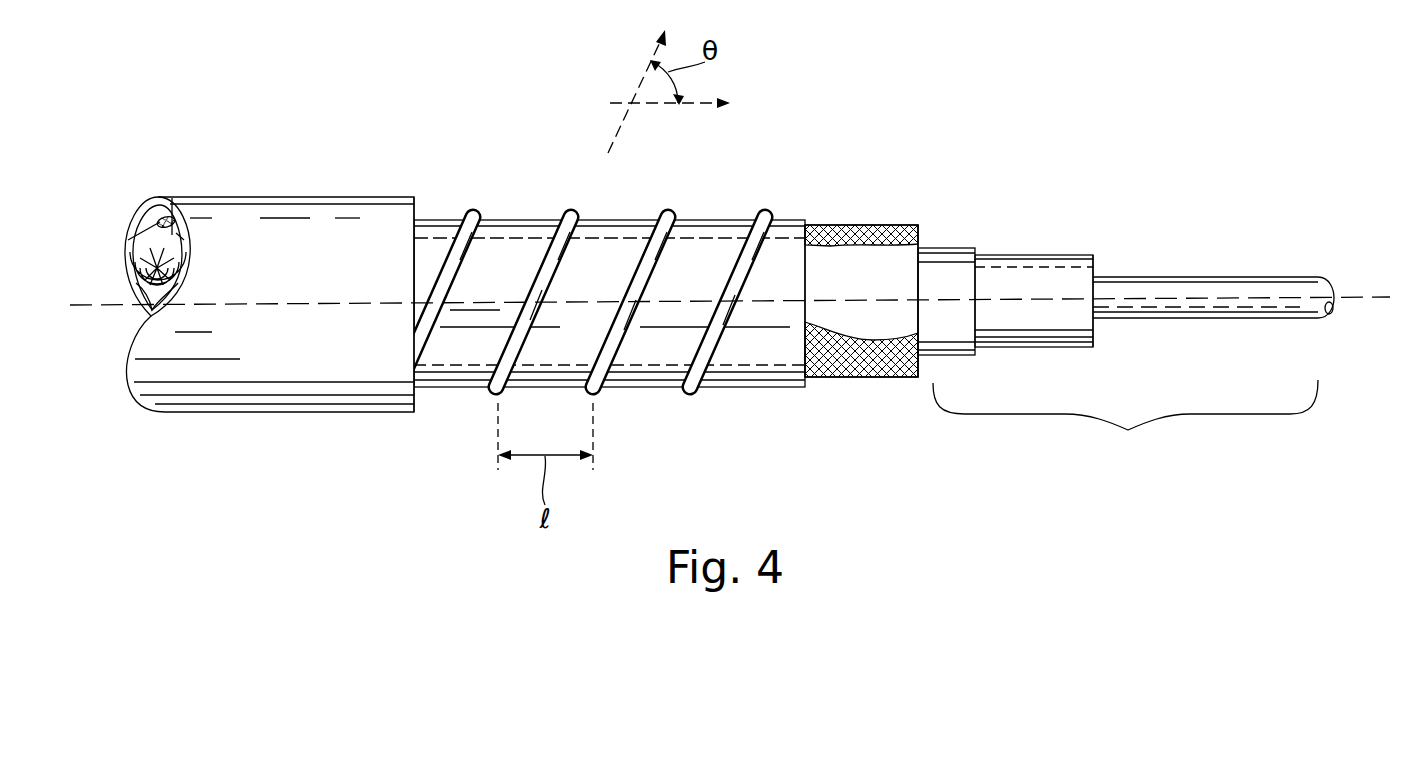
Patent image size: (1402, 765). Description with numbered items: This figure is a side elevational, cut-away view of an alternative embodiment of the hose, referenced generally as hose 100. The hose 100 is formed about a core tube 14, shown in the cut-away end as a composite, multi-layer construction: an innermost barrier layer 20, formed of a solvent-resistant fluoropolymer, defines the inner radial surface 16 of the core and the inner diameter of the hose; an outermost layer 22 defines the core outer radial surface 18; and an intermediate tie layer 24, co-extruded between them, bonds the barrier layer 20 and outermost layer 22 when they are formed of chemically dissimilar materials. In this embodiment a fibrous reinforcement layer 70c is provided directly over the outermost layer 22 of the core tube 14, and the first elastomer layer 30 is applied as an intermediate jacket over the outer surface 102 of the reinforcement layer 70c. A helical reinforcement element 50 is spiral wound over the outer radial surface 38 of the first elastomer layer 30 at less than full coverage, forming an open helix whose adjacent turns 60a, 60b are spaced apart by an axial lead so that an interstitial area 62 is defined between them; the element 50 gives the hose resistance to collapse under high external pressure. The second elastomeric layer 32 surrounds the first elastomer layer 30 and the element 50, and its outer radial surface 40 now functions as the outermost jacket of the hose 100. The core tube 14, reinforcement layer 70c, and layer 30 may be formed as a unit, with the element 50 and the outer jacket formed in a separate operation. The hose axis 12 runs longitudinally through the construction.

The hose 100 is at (1093, 86).
The longitudinal axis 12 is at (1362, 297).
The core tube 14 is at (1118, 444).
The inner radial surface 16 is at (1333, 318).
The outer radial surface 18 is at (945, 248).
The barrier layer 20 is at (1270, 278).
The outermost layer 22 is at (977, 254).
The intermediate tie layer 24 is at (1093, 262).
The first elastomer layer 30 is at (807, 378).
The second elastomeric layer 32 is at (416, 207).
The outer radial surface of first elastomer layer 38 is at (706, 220).
The outer radial surface of second elastomeric layer 40 is at (290, 197).
The helical reinforcement element 50 is at (720, 343).
The turn 60a is at (489, 368).
The turn 60b is at (632, 337).
The interstitial area 62 is at (609, 240).
The fibrous reinforcement layer 70c is at (927, 228).
The outer surface of reinforcement layer 102 is at (852, 227).